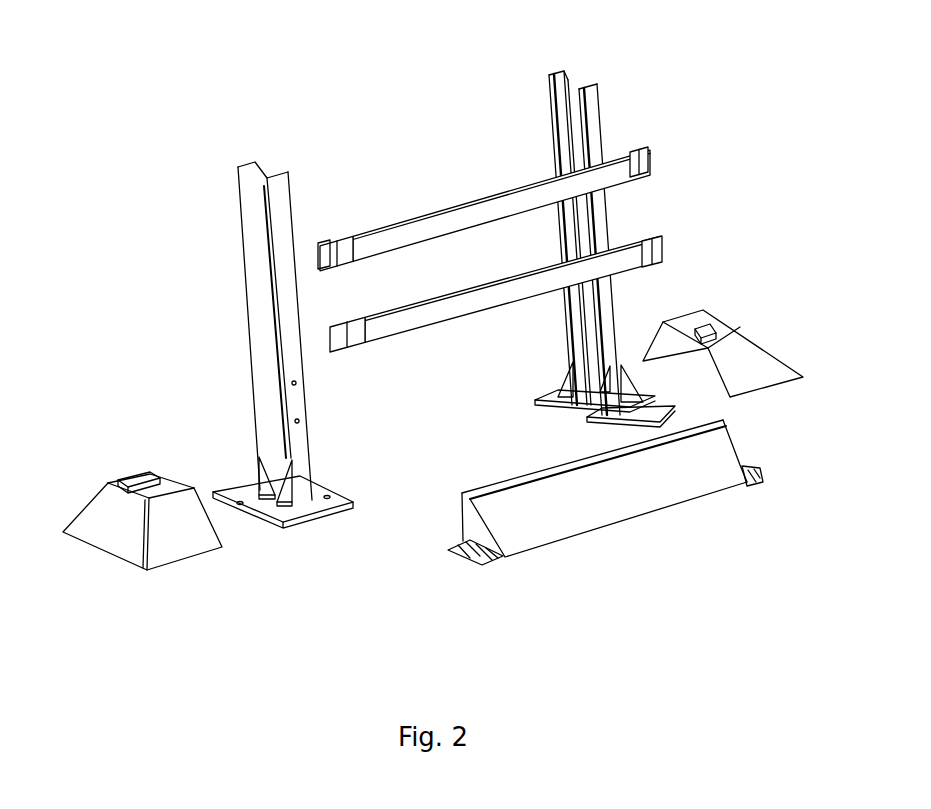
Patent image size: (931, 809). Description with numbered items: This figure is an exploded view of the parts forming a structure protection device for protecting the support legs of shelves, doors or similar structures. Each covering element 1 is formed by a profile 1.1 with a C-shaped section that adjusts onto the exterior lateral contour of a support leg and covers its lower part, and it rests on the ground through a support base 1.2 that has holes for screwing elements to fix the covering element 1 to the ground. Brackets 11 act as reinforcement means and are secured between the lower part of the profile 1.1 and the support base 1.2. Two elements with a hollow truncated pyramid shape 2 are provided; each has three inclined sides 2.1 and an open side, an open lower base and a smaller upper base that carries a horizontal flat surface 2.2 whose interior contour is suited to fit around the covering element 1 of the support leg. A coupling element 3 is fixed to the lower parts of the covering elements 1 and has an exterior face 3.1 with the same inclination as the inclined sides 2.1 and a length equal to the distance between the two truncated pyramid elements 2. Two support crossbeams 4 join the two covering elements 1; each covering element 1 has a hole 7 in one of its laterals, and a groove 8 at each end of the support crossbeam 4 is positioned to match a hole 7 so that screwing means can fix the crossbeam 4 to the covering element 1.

The covering element 1 is at (252, 389).
The profile 1.1 is at (262, 305).
The support base 1.2 is at (300, 512).
The brackets 11 is at (287, 477).
The element with a hollow truncated pyramid shape 2 is at (454, 454).
The inclined sides 2.1 is at (183, 548).
The horizontal flat surface 2.2 is at (150, 477).
The coupling element 3 is at (649, 537).
The exterior face 3.1 is at (660, 482).
The support crossbeam 4 is at (662, 248).
The hole 7 is at (609, 331).
The groove 8 is at (330, 250).